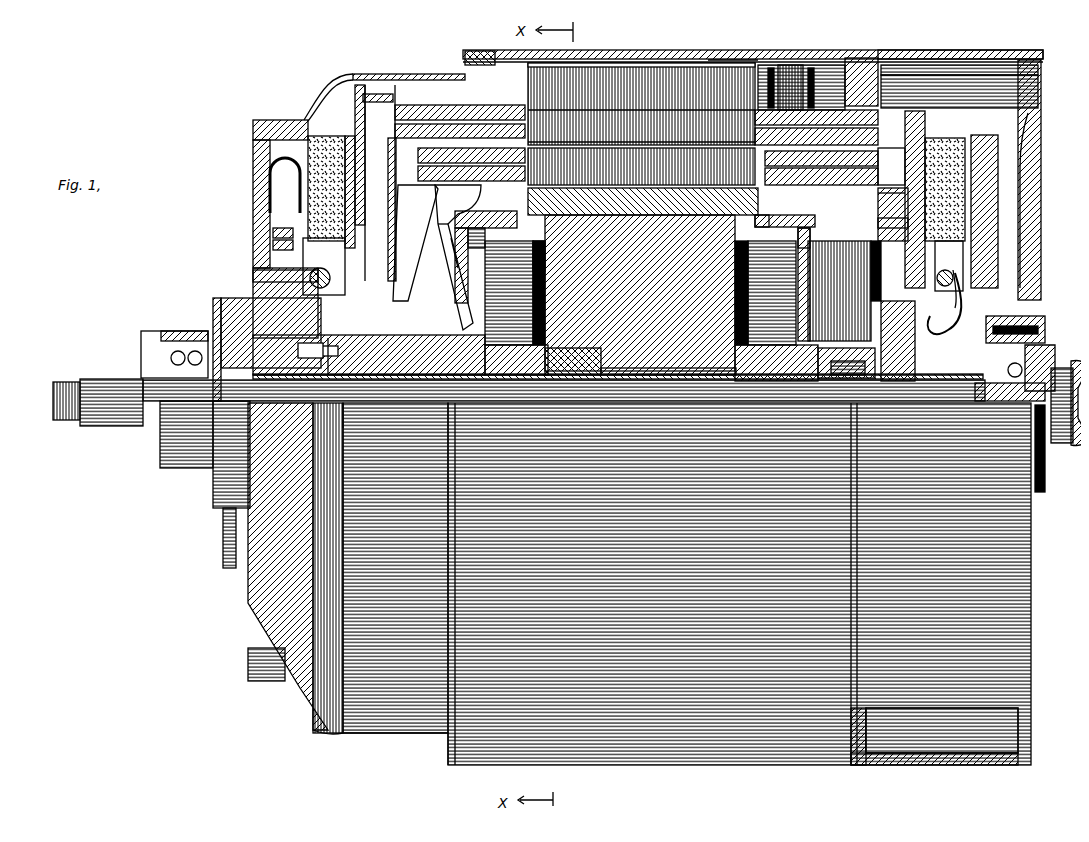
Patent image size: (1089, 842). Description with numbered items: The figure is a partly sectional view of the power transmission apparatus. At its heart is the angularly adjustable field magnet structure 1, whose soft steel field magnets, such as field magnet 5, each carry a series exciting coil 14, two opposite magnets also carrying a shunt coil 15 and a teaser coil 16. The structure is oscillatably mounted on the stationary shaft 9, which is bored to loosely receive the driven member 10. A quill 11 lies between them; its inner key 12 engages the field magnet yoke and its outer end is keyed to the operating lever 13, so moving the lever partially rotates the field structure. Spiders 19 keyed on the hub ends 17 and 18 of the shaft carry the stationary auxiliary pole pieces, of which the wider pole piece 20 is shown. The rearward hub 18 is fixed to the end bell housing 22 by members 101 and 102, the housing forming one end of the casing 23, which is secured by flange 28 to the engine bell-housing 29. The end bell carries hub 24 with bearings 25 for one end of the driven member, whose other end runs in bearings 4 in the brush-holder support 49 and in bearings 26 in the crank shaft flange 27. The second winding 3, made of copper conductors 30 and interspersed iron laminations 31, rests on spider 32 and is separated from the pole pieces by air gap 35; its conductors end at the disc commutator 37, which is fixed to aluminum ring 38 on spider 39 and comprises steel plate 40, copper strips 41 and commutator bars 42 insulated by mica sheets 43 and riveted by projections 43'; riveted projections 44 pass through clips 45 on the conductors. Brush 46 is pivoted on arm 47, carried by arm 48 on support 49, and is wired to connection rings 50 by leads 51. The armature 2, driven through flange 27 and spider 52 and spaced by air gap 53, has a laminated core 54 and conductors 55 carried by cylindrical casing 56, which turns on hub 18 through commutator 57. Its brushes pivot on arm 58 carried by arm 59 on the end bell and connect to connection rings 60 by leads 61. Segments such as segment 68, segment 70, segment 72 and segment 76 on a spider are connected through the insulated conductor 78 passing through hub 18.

The field magnet structure 1 is at (648, 368).
The generator armature 2 is at (641, 104).
The second winding 3 is at (641, 166).
The bearings 4 is at (840, 372).
The field magnet 5 is at (640, 293).
The shaft 9 is at (372, 372).
The driven member 10 is at (110, 405).
The quill 11 is at (432, 368).
The key 12 is at (566, 368).
The operating lever 13 is at (205, 320).
The series exciting coil 14 is at (640, 293).
The shunt coil 15 is at (540, 249).
The teaser coil 16 is at (543, 319).
The forwardly-extending hub 17 is at (790, 368).
The rearwardly-extending hub 18 is at (737, 248).
The spiders 19 is at (510, 198).
The auxiliary pole piece 20 is at (643, 201).
The end bell housing 22 is at (347, 66).
The transmission casing 23 is at (640, 43).
The hub 24 is at (213, 295).
The bearings 25 is at (152, 340).
The bearings 26 is at (1035, 358).
The crank shaft flange 27 is at (1066, 401).
The flange 28 is at (846, 50).
The engine bell-housing 29 is at (920, 43).
The copper conductors 30 is at (418, 150).
The insulated iron laminations 31 is at (445, 66).
The spider 32 is at (415, 243).
The air gap 35 is at (762, 183).
The commutator 37 is at (917, 123).
The aluminum ring 38 is at (995, 100).
The spider 39 is at (980, 200).
The perforated steel plate 40 is at (895, 215).
The copper strips 41 is at (885, 187).
The commutator bars 42 is at (875, 245).
The sheets of mica 43 is at (879, 199).
The projections 43' is at (862, 151).
The riveted projections 44 is at (790, 215).
The clips 45 is at (889, 166).
The brush 46 is at (960, 143).
The arm 47 is at (956, 266).
The arm 48 is at (963, 289).
The brush-holder support 49 is at (844, 291).
The connection rings 50 is at (920, 320).
The leads 51 is at (957, 275).
The spider 52 is at (1012, 157).
The air gap 53 is at (770, 95).
The laminated iron core 54 is at (641, 76).
The conductors 55 is at (783, 95).
The cylindrical casing 56 is at (705, 52).
The commutator 57 is at (340, 130).
The arm 58 is at (324, 266).
The arm 59 is at (245, 275).
The connection rings 60 is at (262, 240).
The leads 61 is at (262, 180).
The segment 68 is at (405, 209).
The segment 70 is at (455, 252).
The segment 72 is at (440, 258).
The segment 76 is at (445, 272).
The insulated conductor 78 is at (296, 350).
The member 101 is at (322, 348).
The member 102 is at (338, 380).